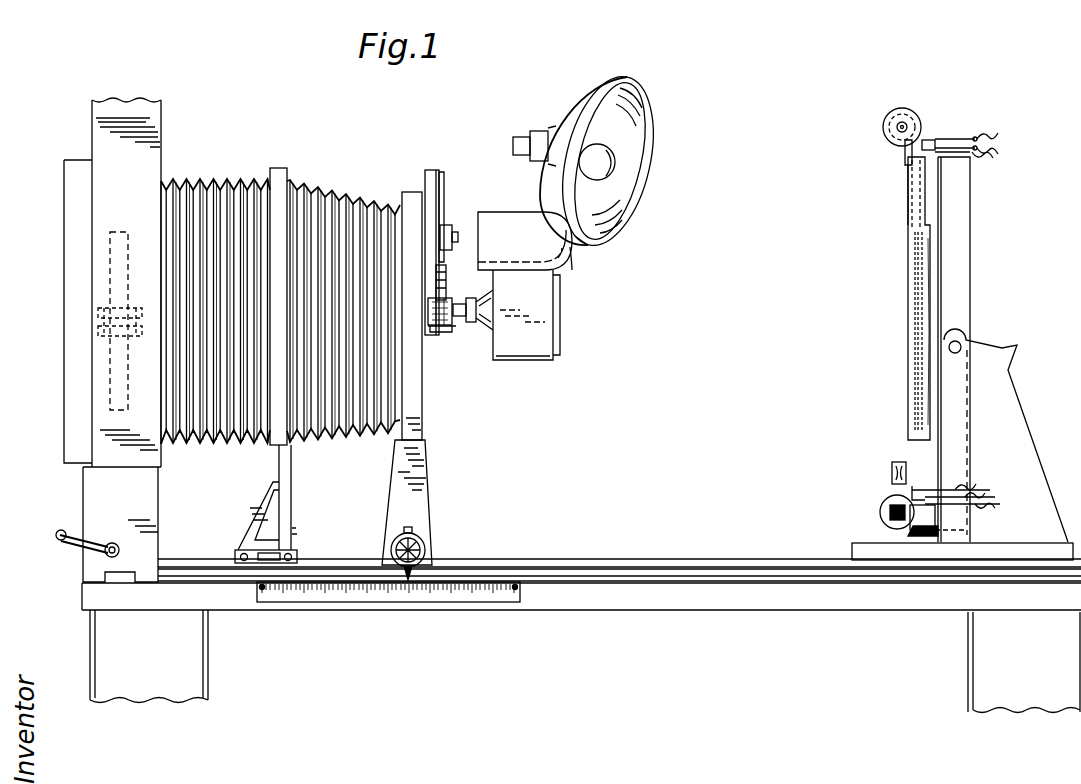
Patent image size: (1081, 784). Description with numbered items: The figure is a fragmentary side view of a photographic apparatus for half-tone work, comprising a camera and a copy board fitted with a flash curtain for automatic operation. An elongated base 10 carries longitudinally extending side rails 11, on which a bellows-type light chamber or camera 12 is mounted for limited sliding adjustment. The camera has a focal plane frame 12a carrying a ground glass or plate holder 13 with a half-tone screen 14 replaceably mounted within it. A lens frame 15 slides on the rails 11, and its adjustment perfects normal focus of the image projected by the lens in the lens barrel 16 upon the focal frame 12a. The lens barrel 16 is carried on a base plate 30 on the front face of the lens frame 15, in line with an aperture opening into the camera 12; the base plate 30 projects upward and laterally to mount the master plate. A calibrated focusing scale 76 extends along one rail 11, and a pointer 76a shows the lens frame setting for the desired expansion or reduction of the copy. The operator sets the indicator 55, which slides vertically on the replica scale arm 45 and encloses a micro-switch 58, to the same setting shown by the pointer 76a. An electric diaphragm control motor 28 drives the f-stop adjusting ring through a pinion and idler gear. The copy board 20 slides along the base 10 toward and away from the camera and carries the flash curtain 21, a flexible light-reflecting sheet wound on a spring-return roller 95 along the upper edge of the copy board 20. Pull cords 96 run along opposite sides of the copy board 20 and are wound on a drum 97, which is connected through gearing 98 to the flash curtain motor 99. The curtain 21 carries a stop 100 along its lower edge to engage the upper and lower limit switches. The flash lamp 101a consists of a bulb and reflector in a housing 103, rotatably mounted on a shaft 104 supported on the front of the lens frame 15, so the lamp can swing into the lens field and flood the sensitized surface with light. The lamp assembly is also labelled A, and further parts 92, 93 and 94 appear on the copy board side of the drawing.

The base 10 is at (636, 600).
The side rails 11 is at (565, 559).
The camera 12 is at (318, 190).
The focal plane frame 12a is at (70, 215).
The plate holder 13 is at (98, 313).
The half-tone screen 14 is at (110, 248).
The lens frame 15 is at (405, 194).
The lens barrel 16 is at (457, 303).
The copy board 20 is at (979, 265).
The flash curtain 21 is at (905, 150).
The diaphragm control motor 28 is at (442, 328).
The base plate 30 is at (430, 176).
The replica scale arm 45 is at (442, 172).
The indicator 55 is at (448, 226).
The micro-switch 58 is at (445, 282).
The focusing scale 76 is at (482, 604).
The pointer 76a is at (414, 576).
The lower bracket 92 is at (892, 470).
The upper wires 93 is at (968, 133).
The lower wires 94 is at (953, 481).
The roller 95 is at (883, 127).
The pull cords 96 is at (912, 368).
The drum 97 is at (880, 504).
The gearing 98 is at (890, 515).
The flash curtain motor 99 is at (935, 520).
The stop 100 is at (928, 140).
The flash lamp 101a is at (514, 206).
The housing 103 is at (540, 298).
The shaft 104 is at (462, 334).
The lamp A is at (606, 160).